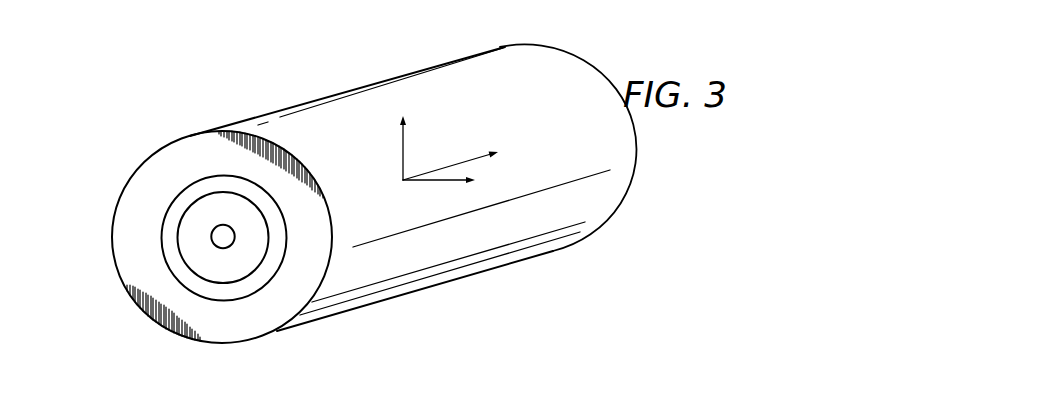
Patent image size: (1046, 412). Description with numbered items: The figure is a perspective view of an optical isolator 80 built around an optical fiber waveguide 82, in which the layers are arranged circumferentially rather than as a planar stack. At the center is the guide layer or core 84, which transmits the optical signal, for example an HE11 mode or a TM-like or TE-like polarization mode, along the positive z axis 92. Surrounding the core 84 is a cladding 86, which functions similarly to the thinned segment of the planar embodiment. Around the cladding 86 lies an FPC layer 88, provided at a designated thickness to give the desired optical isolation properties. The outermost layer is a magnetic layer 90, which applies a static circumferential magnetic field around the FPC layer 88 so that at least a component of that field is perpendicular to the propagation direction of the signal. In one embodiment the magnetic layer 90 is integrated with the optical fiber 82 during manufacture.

The optical isolator 80 is at (276, 76).
The optical fiber waveguide 82 is at (608, 184).
The core 84 is at (211, 239).
The cladding 86 is at (265, 238).
The FPC layer 88 is at (178, 202).
The magnetic layer 90 is at (124, 267).
The positive z axis 92 is at (458, 165).